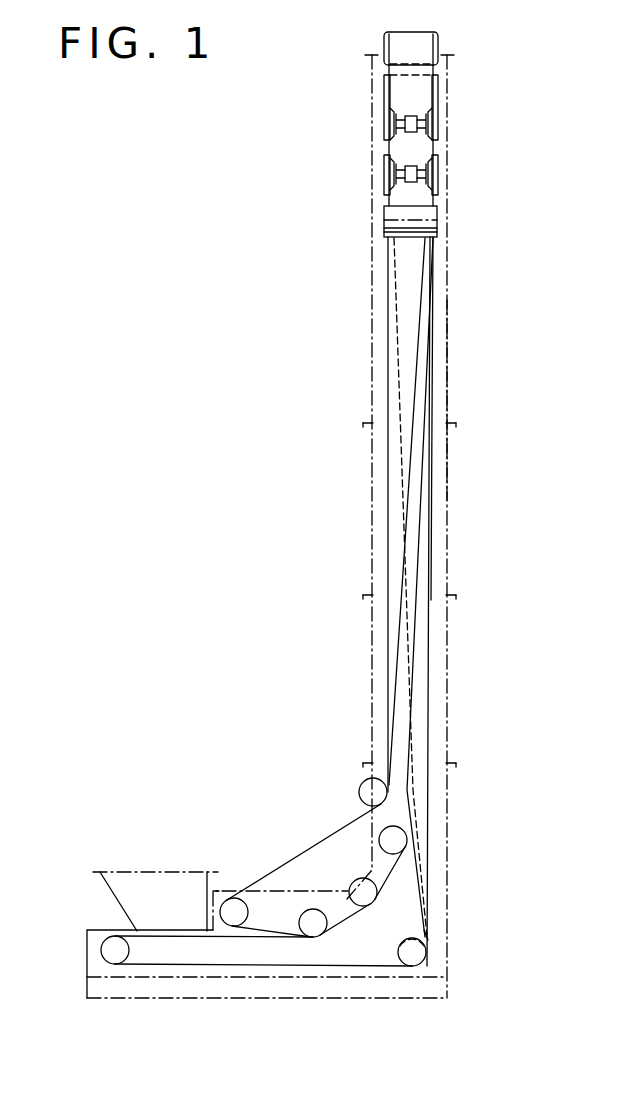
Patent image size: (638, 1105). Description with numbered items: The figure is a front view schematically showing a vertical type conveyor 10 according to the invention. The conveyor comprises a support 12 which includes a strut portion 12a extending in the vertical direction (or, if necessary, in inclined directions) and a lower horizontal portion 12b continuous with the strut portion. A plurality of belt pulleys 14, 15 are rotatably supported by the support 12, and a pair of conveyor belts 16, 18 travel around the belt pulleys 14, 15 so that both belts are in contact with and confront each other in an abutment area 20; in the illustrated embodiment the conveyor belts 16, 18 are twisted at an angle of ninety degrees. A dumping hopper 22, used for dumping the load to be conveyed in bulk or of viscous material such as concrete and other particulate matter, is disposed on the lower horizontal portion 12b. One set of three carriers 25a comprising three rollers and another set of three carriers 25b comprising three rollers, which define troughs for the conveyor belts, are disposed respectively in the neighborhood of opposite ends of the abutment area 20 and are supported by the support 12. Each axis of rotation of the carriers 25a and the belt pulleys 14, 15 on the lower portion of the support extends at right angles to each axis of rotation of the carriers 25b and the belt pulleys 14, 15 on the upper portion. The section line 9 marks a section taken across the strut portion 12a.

The section line 9- 9 is at (372, 253).
The vertical type conveyor 10 is at (509, 212).
The support 12 is at (448, 366).
The strut portion 12a is at (449, 396).
The lower horizontal portion 12b is at (247, 998).
The belt pulley 14 is at (438, 40).
The belt pulley 15 is at (438, 87).
The conveyor belt 16 is at (318, 843).
The conveyor belt 18 is at (427, 910).
The abutment area 20 is at (428, 487).
The dumping hopper 22 is at (185, 872).
The carriers 25a is at (407, 840).
The carriers 25b is at (438, 123).